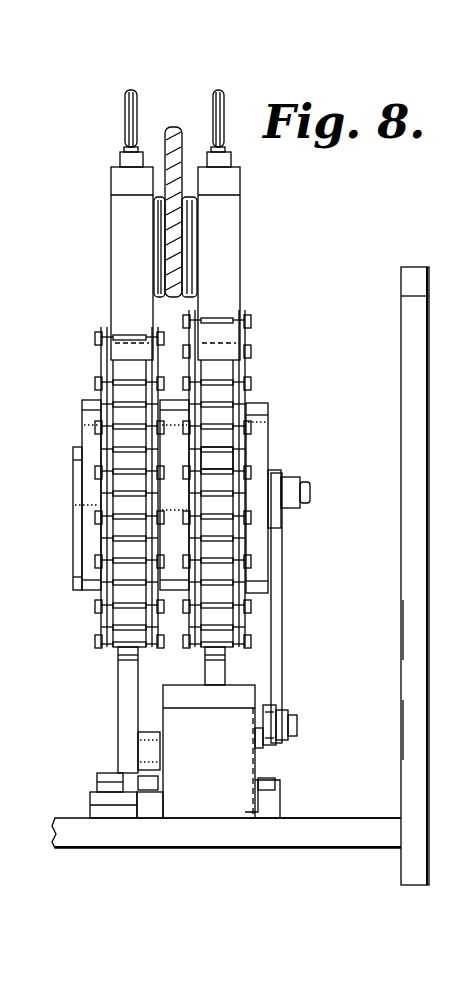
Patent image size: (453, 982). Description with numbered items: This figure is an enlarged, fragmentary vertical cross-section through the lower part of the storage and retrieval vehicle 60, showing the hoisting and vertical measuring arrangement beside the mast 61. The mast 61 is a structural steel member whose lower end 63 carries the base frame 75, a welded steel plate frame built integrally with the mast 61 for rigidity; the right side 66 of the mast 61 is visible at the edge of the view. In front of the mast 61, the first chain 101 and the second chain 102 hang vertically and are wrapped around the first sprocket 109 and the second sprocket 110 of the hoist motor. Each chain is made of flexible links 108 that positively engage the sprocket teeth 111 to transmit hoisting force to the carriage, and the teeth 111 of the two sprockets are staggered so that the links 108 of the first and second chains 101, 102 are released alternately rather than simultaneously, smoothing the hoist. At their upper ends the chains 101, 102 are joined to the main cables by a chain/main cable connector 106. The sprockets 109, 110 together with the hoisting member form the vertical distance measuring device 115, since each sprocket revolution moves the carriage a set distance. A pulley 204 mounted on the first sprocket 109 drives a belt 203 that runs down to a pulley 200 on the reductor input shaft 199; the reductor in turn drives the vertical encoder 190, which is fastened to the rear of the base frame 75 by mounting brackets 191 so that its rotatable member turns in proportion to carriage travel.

The vehicle 60 is at (108, 849).
The mast 61 is at (401, 368).
The lower end 63 is at (401, 729).
The right side 66 is at (410, 631).
The base frame 75 is at (313, 849).
The first chain 101 is at (245, 378).
The second chain 102 is at (105, 376).
The chain/main cable connector 106 is at (240, 283).
The links 108 is at (246, 413).
The first sprocket 109 is at (220, 462).
The second sprocket 110 is at (125, 488).
The sprocket teeth 111 is at (122, 476).
The vertical distance measuring device 115 is at (100, 645).
The vertical encoder 190 is at (163, 708).
The mounting brackets 191 is at (256, 690).
The reductor input shaft 199 is at (260, 732).
The pulley 200 is at (285, 745).
The belt 203 is at (282, 598).
The pulley 204 is at (290, 512).